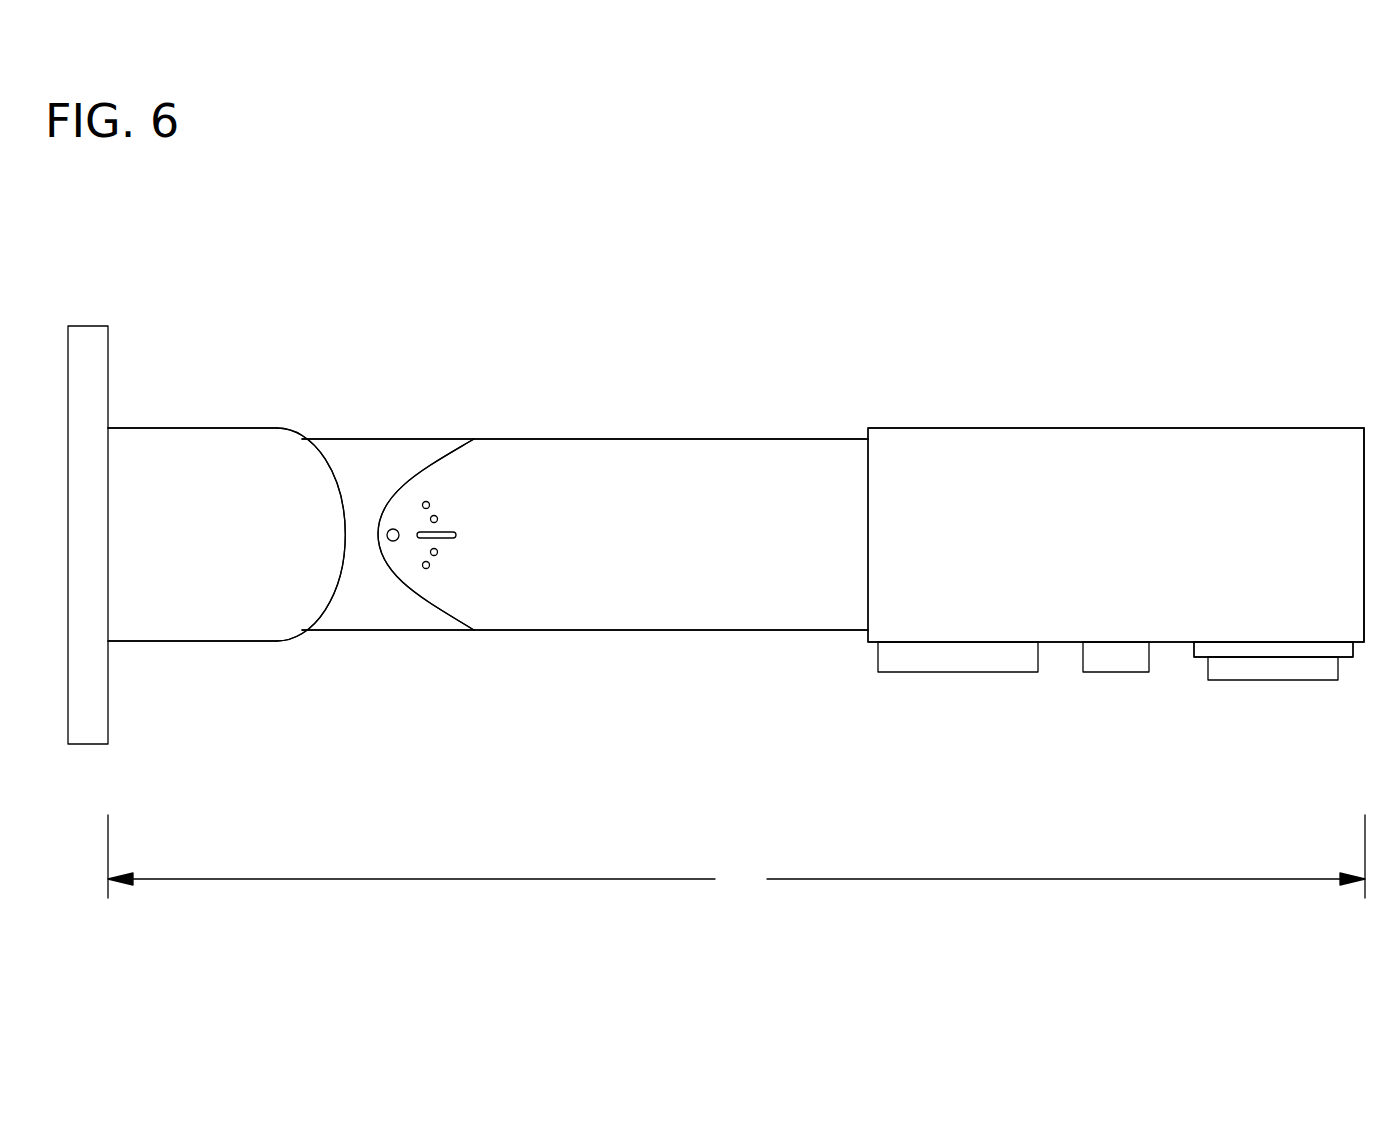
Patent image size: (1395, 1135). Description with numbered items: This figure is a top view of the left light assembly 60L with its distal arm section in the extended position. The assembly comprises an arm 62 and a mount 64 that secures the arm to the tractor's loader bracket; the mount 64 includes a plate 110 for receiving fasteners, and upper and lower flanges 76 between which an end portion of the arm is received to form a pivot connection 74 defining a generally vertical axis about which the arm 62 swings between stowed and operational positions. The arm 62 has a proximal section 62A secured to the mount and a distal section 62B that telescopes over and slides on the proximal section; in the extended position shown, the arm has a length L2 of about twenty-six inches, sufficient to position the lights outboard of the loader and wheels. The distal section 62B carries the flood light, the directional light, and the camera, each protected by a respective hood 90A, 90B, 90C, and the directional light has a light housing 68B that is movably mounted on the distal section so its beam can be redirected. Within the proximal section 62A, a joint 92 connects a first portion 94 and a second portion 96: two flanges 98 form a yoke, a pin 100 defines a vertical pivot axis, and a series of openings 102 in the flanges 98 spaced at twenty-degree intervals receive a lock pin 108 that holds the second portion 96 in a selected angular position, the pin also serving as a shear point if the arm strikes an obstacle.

The left light assembly 60L is at (1050, 242).
The arm 62 is at (945, 428).
The proximal section 62A is at (611, 439).
The distal section 62B is at (1225, 428).
The mount 64 is at (180, 428).
The light housing 68B is at (1345, 657).
The pivot connection 74 is at (254, 363).
The upper and lower flanges 76 is at (230, 595).
The hood 90A is at (960, 672).
The hood 90B is at (1118, 672).
The hood 90C is at (1233, 680).
The joint 92 is at (412, 676).
The first portion 94 is at (364, 464).
The second portion 96 is at (682, 593).
The flanges 98 is at (445, 485).
The pin 100 is at (387, 540).
The openings 102 is at (430, 505).
The lock pin 108 is at (456, 535).
The plate 110 is at (108, 713).
The length L2 is at (736, 856).